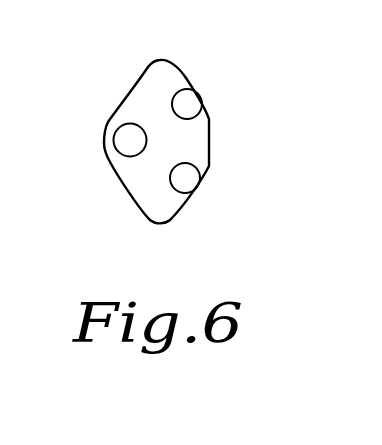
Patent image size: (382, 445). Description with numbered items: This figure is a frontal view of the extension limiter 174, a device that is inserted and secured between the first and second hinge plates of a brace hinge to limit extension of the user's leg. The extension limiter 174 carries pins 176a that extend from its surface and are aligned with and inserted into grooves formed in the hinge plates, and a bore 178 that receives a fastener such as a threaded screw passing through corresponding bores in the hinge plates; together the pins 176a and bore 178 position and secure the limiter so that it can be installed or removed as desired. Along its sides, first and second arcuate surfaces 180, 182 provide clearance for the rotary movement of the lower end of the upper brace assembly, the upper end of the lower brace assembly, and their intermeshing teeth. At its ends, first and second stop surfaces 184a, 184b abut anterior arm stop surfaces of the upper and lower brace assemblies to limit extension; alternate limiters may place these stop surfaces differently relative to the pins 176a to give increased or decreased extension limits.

The extension limiter 174 is at (211, 135).
The pin 176a is at (190, 101).
The bore 178 is at (125, 133).
The first arcuate surface 180 is at (131, 92).
The second arcuate surface 182 is at (127, 181).
The first stop surface 184a is at (170, 58).
The second stop surface 184b is at (163, 224).